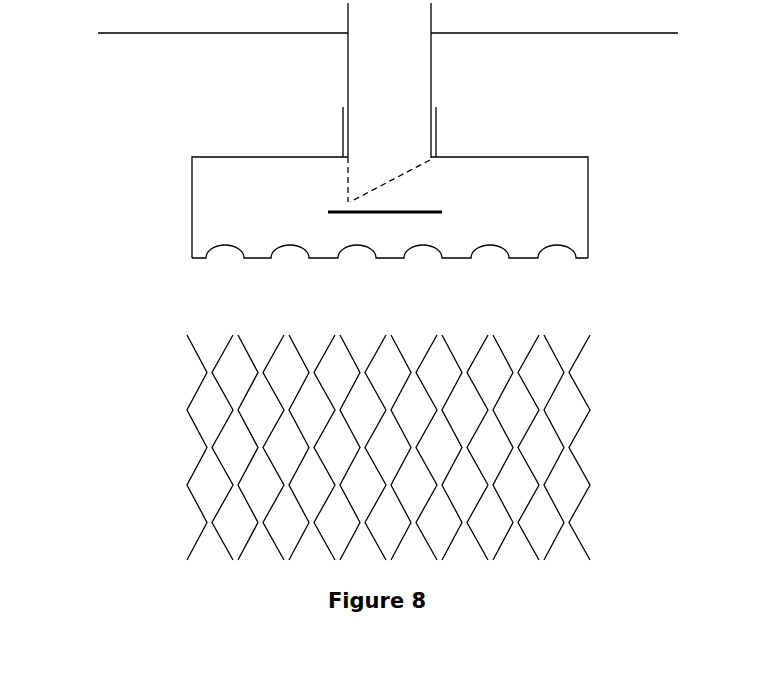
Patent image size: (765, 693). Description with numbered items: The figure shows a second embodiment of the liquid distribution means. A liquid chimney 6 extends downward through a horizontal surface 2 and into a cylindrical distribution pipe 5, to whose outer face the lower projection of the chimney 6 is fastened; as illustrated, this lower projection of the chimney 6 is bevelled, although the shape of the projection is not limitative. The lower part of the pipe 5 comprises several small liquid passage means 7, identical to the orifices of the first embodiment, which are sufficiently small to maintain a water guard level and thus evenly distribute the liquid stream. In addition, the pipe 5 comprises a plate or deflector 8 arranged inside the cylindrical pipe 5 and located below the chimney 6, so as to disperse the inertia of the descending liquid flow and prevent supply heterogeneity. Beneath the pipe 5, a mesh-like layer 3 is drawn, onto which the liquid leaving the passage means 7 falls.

The substrate surface 2 is at (188, 35).
The mesh 3 is at (188, 408).
The distribution pipe 5 is at (534, 155).
The liquid chimney 6 is at (434, 68).
The liquid passage means 7 is at (559, 248).
The plate or deflector 8 is at (366, 216).